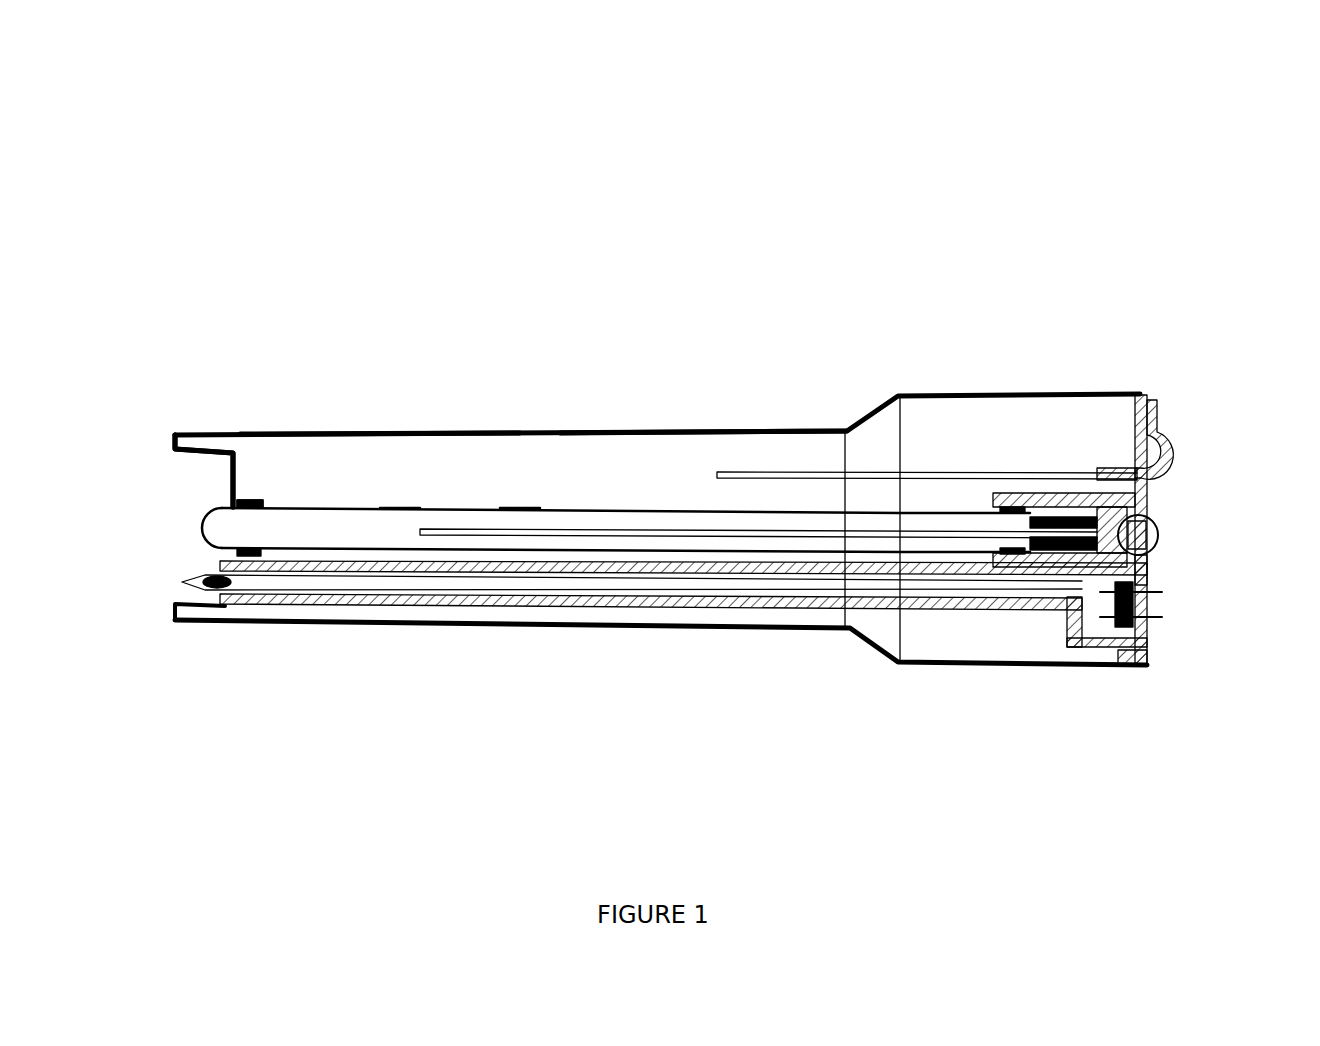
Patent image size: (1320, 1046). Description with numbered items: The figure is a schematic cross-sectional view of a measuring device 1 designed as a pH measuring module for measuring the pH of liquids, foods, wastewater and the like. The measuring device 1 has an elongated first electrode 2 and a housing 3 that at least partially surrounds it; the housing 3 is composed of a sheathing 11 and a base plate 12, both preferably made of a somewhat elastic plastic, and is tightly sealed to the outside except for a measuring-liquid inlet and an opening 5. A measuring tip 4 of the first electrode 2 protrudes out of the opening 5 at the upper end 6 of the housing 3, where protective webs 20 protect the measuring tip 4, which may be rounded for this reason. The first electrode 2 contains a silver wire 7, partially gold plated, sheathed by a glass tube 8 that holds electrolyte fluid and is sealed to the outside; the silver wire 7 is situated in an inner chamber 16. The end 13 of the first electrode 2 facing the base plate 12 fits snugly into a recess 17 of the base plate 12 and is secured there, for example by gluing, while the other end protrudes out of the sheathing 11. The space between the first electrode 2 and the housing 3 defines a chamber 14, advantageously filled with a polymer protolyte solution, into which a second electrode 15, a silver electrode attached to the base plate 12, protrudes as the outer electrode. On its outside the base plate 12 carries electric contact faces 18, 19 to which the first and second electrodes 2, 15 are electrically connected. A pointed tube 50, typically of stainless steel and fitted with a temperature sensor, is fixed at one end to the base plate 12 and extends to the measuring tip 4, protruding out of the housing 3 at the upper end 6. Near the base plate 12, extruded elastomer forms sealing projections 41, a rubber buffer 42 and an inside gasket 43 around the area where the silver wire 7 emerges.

The measuring device 1 is at (282, 154).
The first electrode 2 is at (536, 504).
The housing 3 is at (1130, 393).
The measuring tip 4 is at (197, 528).
The opening 5 is at (216, 487).
The upper end 6 is at (310, 432).
The silver wire 7 is at (467, 528).
The glass tube 8 is at (393, 508).
The sheathing 11 is at (623, 427).
The base plate 12 is at (1147, 665).
The end 13 is at (1090, 510).
The chamber 14 is at (358, 465).
The second electrode 15 is at (830, 477).
The inner chamber 16 is at (383, 528).
The recess 17 is at (1176, 572).
The electric contact face 18 is at (1158, 523).
The electric contact face 19 is at (1165, 448).
The protective web 20 is at (200, 432).
The sealing projection 41 is at (1045, 503).
The rubber buffer 42 is at (1040, 557).
The inside gasket 43 is at (995, 500).
The tube 50 is at (303, 595).